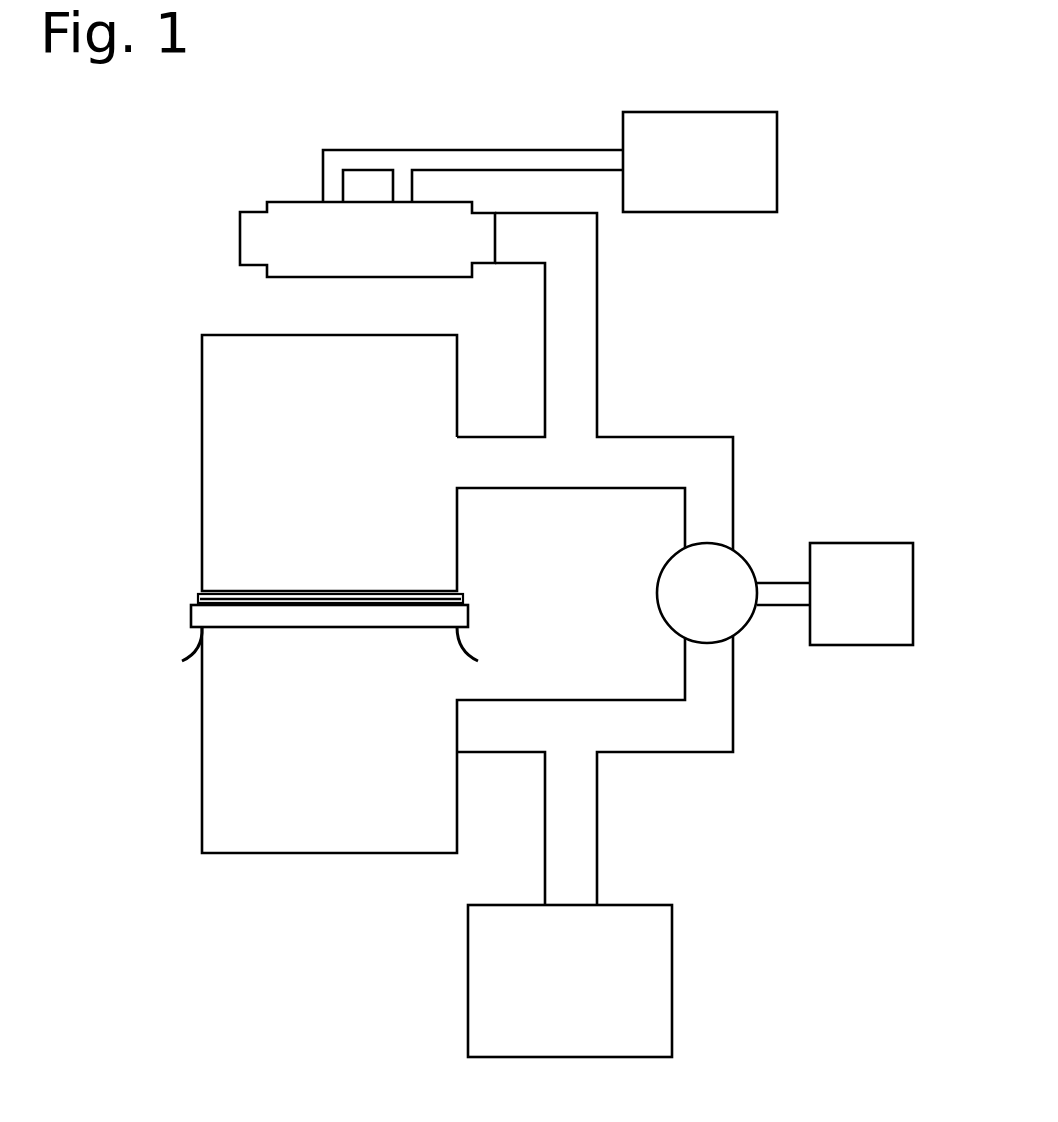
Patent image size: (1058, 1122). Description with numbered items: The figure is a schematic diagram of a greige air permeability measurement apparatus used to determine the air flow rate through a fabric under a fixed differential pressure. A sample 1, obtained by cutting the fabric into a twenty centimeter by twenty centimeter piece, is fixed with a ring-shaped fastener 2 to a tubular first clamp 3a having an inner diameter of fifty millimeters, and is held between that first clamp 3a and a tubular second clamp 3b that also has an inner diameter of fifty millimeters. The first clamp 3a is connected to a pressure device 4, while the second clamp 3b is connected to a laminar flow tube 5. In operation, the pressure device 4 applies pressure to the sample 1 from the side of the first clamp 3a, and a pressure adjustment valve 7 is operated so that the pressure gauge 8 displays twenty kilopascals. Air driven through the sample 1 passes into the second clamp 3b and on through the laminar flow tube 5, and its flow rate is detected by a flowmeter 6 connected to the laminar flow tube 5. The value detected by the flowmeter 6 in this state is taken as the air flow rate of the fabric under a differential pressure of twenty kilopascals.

The sample 1 is at (172, 653).
The ring-shaped fastener 2 is at (187, 617).
The tubular first clamp 3a is at (308, 730).
The tubular second clamp 3b is at (302, 480).
The pressure device 4 is at (540, 985).
The laminar flow tube 5 is at (350, 246).
The flowmeter 6 is at (695, 162).
The pressure adjustment valve 7 is at (710, 605).
The pressure gauge 8 is at (862, 598).